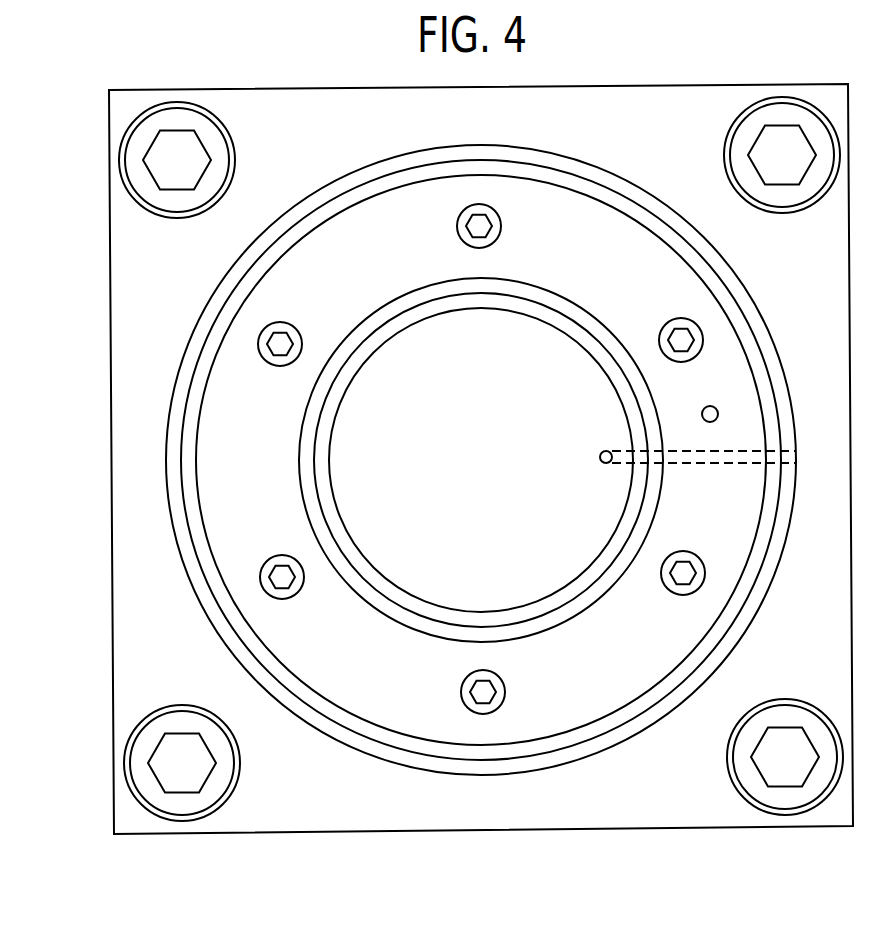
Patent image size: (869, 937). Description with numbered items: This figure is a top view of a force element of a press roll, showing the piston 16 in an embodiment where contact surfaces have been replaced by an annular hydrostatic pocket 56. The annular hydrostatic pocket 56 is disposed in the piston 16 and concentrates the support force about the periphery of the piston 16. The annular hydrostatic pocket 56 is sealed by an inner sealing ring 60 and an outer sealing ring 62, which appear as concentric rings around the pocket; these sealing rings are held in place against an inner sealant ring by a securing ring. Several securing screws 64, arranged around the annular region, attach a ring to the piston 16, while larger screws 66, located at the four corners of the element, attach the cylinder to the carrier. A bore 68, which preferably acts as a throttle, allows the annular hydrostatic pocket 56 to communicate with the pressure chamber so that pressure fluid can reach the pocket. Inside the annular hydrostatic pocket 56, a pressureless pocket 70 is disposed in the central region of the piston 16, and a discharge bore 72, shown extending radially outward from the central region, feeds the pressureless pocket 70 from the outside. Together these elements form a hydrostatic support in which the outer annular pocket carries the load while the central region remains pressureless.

The piston 16 is at (758, 315).
The annular hydrostatic pocket 56 is at (222, 410).
The inner sealing ring 60 is at (312, 505).
The outer sealing ring 62 is at (190, 490).
The securing screws 64 is at (263, 339).
The screws 66 is at (179, 118).
The bore 68 is at (714, 406).
The pressureless pocket 70 is at (538, 355).
The discharge bore 72 is at (602, 462).